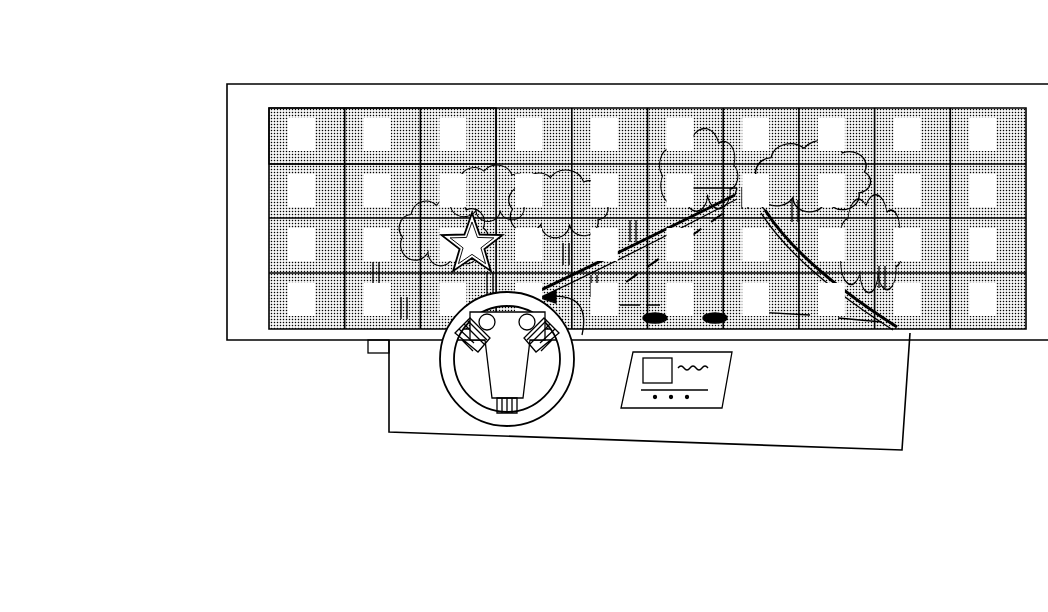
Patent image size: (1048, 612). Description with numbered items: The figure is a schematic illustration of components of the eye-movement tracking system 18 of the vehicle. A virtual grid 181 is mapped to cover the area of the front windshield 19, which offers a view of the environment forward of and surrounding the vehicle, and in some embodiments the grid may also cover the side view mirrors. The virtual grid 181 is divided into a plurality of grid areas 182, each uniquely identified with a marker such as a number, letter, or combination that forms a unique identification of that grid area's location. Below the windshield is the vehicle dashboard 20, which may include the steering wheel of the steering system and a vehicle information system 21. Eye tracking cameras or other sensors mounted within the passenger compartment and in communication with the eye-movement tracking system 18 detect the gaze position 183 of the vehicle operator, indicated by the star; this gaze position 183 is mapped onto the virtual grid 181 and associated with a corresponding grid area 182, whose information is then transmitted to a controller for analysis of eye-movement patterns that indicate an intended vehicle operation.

The eye-movement tracking system 18 is at (152, 123).
The front windshield 19 is at (227, 310).
The vehicle dashboard 20 is at (410, 393).
The vehicle information system 21 is at (712, 370).
The virtual grid 181 is at (928, 108).
The grid area 182 is at (376, 110).
The gaze position 183 is at (450, 262).